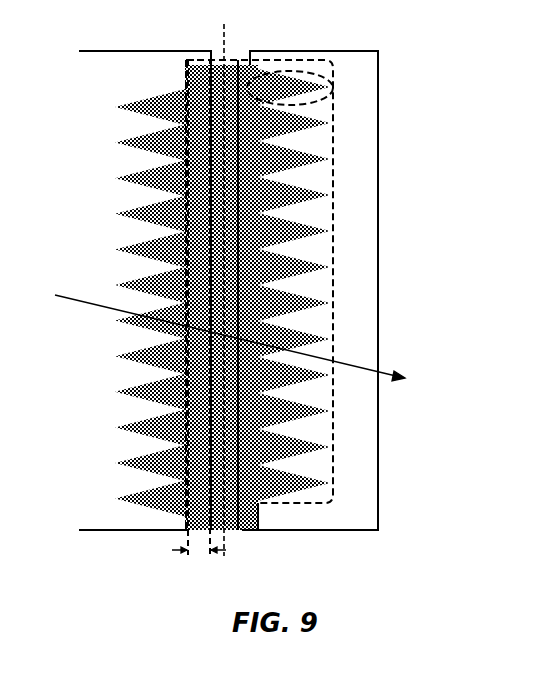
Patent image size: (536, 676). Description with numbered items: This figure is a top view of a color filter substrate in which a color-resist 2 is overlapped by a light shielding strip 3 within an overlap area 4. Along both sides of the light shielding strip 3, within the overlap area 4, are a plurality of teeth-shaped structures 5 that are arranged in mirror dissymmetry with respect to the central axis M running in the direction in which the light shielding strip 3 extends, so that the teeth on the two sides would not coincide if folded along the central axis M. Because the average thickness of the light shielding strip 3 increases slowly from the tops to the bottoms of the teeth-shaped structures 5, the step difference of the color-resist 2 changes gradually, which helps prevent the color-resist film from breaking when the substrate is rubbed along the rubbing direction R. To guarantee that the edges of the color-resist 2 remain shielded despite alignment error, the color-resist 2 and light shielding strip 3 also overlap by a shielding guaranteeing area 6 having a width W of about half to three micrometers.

The color-resist 2 is at (358, 65).
The light shielding strip 3 is at (237, 63).
The overlap area 4 is at (334, 248).
The teeth-shaped structures 5 is at (292, 72).
The shielding guaranteeing area 6 is at (192, 61).
The central axis M is at (222, 338).
The width of the shielding guaranteeing area W is at (199, 569).
The rubbing direction R is at (244, 342).